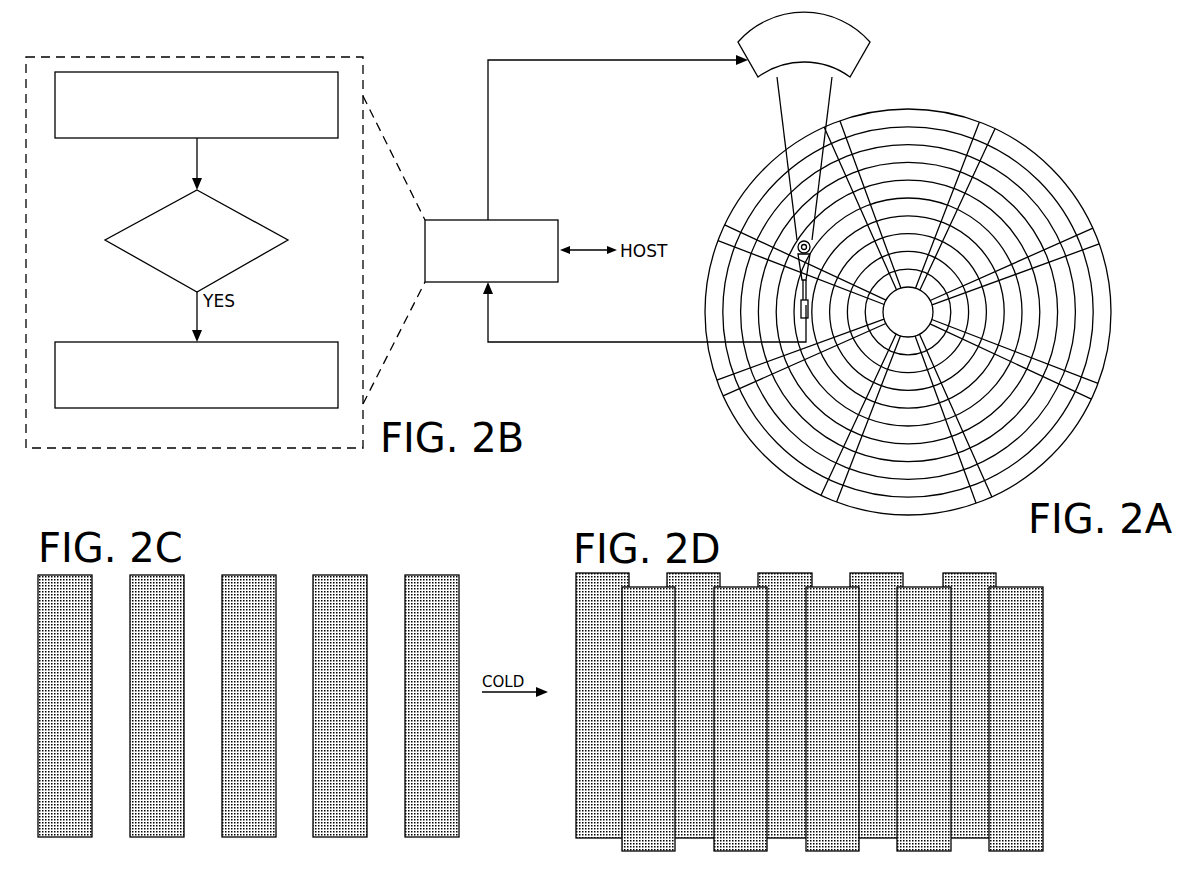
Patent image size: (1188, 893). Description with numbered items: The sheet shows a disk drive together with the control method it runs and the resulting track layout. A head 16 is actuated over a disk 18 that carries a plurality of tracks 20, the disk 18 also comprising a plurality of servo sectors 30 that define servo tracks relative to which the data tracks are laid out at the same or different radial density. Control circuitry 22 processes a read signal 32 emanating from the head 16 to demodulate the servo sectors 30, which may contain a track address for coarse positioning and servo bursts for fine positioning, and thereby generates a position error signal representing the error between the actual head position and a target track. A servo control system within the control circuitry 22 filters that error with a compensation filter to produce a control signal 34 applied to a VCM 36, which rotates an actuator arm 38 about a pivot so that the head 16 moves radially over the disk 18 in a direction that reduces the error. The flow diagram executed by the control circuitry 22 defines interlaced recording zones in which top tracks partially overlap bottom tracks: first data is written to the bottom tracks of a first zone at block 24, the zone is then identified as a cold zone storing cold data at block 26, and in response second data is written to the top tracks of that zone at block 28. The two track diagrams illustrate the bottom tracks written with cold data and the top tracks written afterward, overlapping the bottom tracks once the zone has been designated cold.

In FIG. 2A, the head 16 is at (792, 320).
In FIG. 2A, the disk 18 is at (1054, 150).
In FIG. 2A, the tracks 20 is at (899, 140).
In FIG. 2A, the control circuitry 22 is at (438, 282).
In FIG. 2B, the block 24 is at (296, 138).
In FIG. 2B, the block 26 is at (252, 262).
In FIG. 2B, the block 28 is at (312, 408).
In FIG. 2A, the servo sectors 30 is at (914, 320).
In FIG. 2A, the read signal 32 is at (612, 342).
In FIG. 2A, the control signal 34 is at (488, 118).
In FIG. 2A, the VCM 36 is at (750, 70).
In FIG. 2A, the actuator arm 38 is at (788, 136).